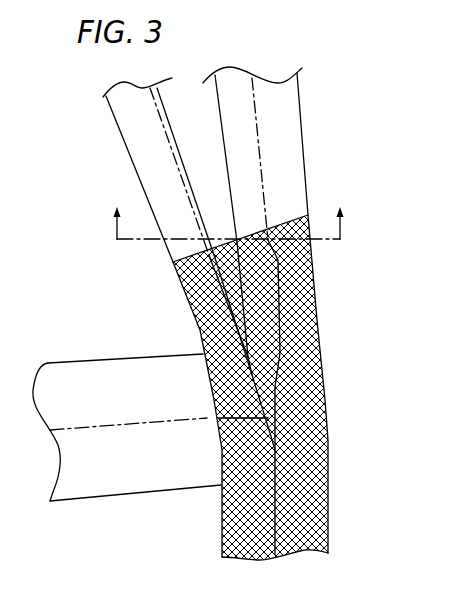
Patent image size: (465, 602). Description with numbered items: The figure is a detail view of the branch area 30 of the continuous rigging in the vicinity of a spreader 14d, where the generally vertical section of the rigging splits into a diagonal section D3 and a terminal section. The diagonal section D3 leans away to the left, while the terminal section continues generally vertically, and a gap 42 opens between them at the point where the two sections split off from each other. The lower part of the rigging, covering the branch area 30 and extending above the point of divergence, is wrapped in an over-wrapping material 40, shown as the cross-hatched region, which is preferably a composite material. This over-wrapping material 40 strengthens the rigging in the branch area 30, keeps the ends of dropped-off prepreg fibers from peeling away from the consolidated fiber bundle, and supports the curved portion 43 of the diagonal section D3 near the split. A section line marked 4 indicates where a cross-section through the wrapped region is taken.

The spreader 14d is at (150, 474).
The branch area 30 is at (334, 510).
The over-wrapping material 40 is at (329, 443).
The gap 42 is at (185, 82).
The curved portion 43 is at (198, 303).
The diagonal section D3 is at (118, 117).
The section line 4- 4 is at (229, 210).